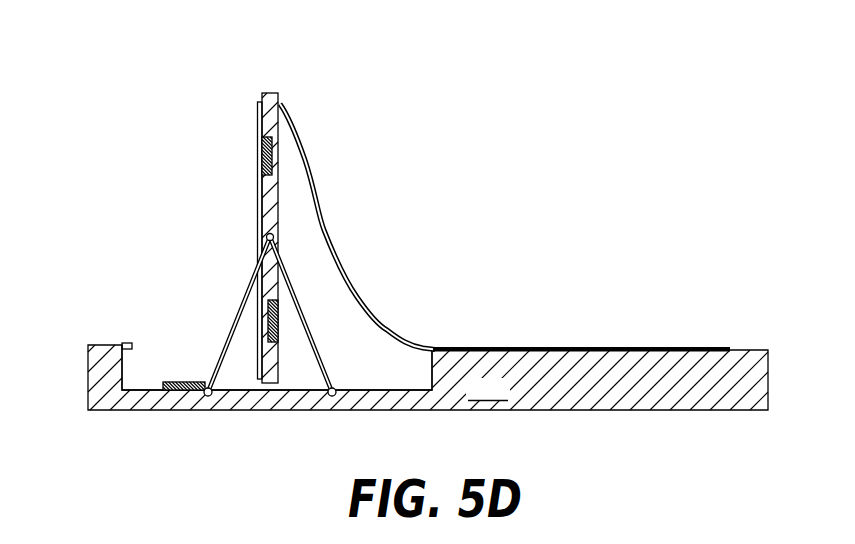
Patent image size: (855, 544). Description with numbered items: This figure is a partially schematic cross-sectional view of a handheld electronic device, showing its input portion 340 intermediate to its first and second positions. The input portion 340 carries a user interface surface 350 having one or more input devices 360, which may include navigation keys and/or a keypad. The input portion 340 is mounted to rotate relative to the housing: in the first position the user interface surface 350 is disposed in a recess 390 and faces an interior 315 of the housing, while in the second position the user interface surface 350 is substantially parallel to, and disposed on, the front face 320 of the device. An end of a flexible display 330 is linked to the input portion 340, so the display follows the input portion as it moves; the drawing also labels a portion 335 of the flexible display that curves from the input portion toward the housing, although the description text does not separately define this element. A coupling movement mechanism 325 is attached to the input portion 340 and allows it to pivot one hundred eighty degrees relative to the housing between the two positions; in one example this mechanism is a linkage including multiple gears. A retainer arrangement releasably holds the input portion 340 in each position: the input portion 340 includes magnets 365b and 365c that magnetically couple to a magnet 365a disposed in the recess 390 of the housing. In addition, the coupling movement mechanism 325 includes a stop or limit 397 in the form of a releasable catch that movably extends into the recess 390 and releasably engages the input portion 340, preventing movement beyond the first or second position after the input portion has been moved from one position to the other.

The interior 315 is at (600, 376).
The front face 320 is at (755, 349).
The coupling movement mechanism 325 is at (213, 372).
The flexible display 330 is at (535, 347).
The flexible membrane 335 is at (281, 103).
The input portion 340 is at (252, 98).
The user interface surface 350 is at (261, 188).
The input devices 360 is at (253, 260).
The magnet 365a is at (168, 392).
The magnet 365b is at (279, 312).
The magnet 365c is at (261, 157).
The recess 390 is at (388, 378).
The stop or limit 397 is at (127, 345).